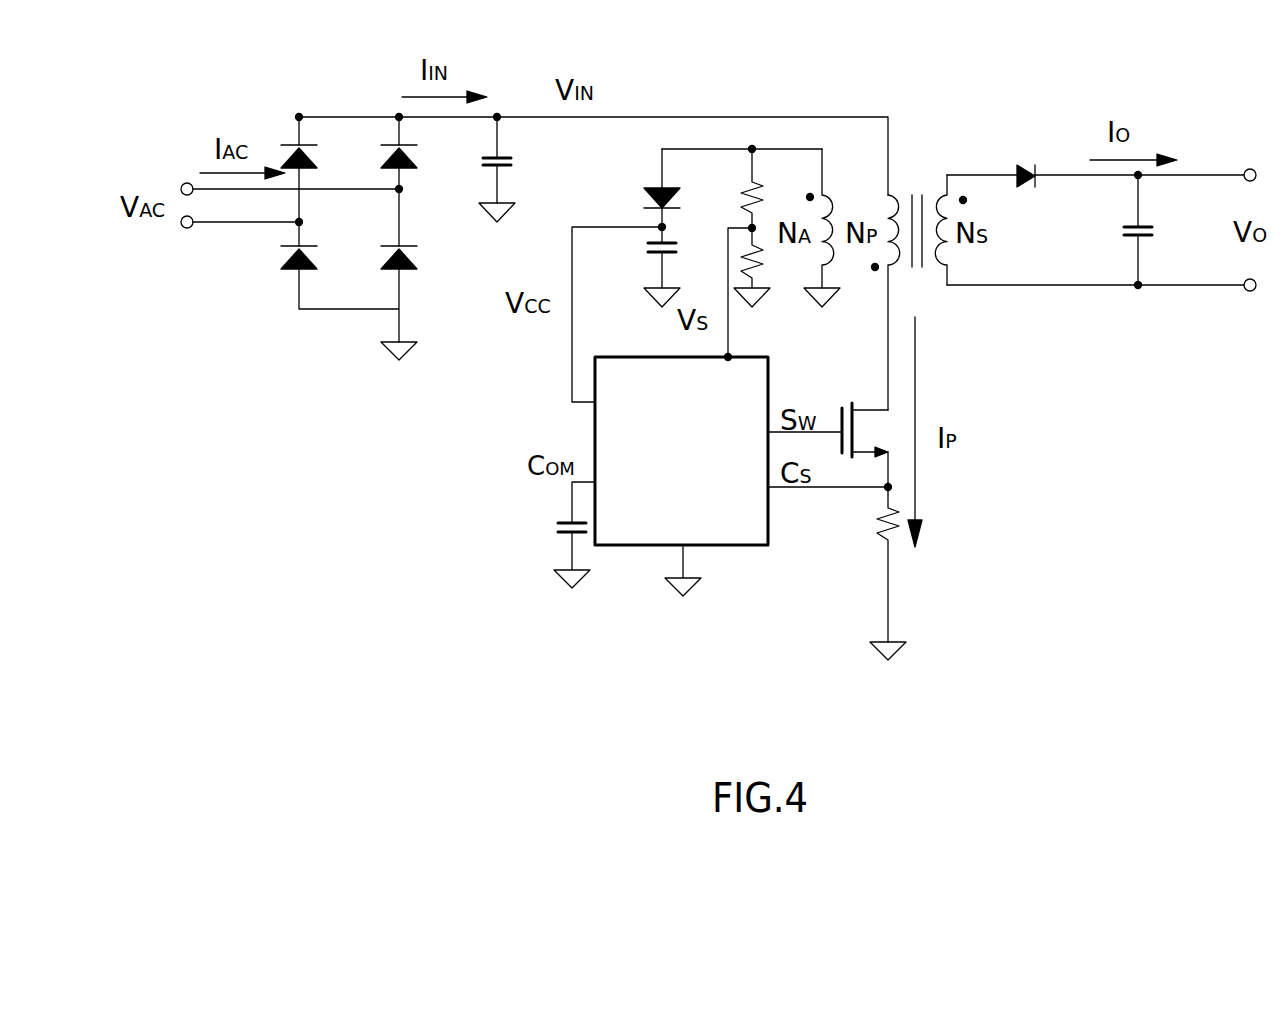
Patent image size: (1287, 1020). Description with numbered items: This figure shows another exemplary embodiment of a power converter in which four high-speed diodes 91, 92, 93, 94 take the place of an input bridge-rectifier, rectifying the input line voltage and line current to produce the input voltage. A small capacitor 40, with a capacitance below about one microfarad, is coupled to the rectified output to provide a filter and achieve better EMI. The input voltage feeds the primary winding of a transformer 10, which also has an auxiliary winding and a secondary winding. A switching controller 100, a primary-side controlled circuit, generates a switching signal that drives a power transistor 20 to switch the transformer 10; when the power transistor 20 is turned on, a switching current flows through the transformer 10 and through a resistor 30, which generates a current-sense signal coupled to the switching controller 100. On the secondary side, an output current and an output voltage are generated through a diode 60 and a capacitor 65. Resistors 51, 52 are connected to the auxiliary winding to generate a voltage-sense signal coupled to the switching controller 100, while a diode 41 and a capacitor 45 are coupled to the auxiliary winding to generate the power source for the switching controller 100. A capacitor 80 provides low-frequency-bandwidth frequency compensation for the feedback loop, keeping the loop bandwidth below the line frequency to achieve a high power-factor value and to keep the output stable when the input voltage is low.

The transformer 10 is at (920, 182).
The power transistor 20 is at (860, 425).
The resistor 30 is at (868, 573).
The capacitor 40 is at (515, 169).
The diode 41 is at (644, 188).
The capacitor 45 is at (644, 267).
The resistor 51 is at (738, 188).
The resistor 52 is at (767, 267).
The diode 60 is at (1031, 158).
The capacitor 65 is at (1115, 230).
The capacitor 80 is at (551, 549).
The high-speed diode 91 is at (319, 160).
The high-speed diode 92 is at (420, 160).
The high-speed diode 93 is at (319, 261).
The high-speed diode 94 is at (420, 260).
The switching controller 100 is at (730, 546).